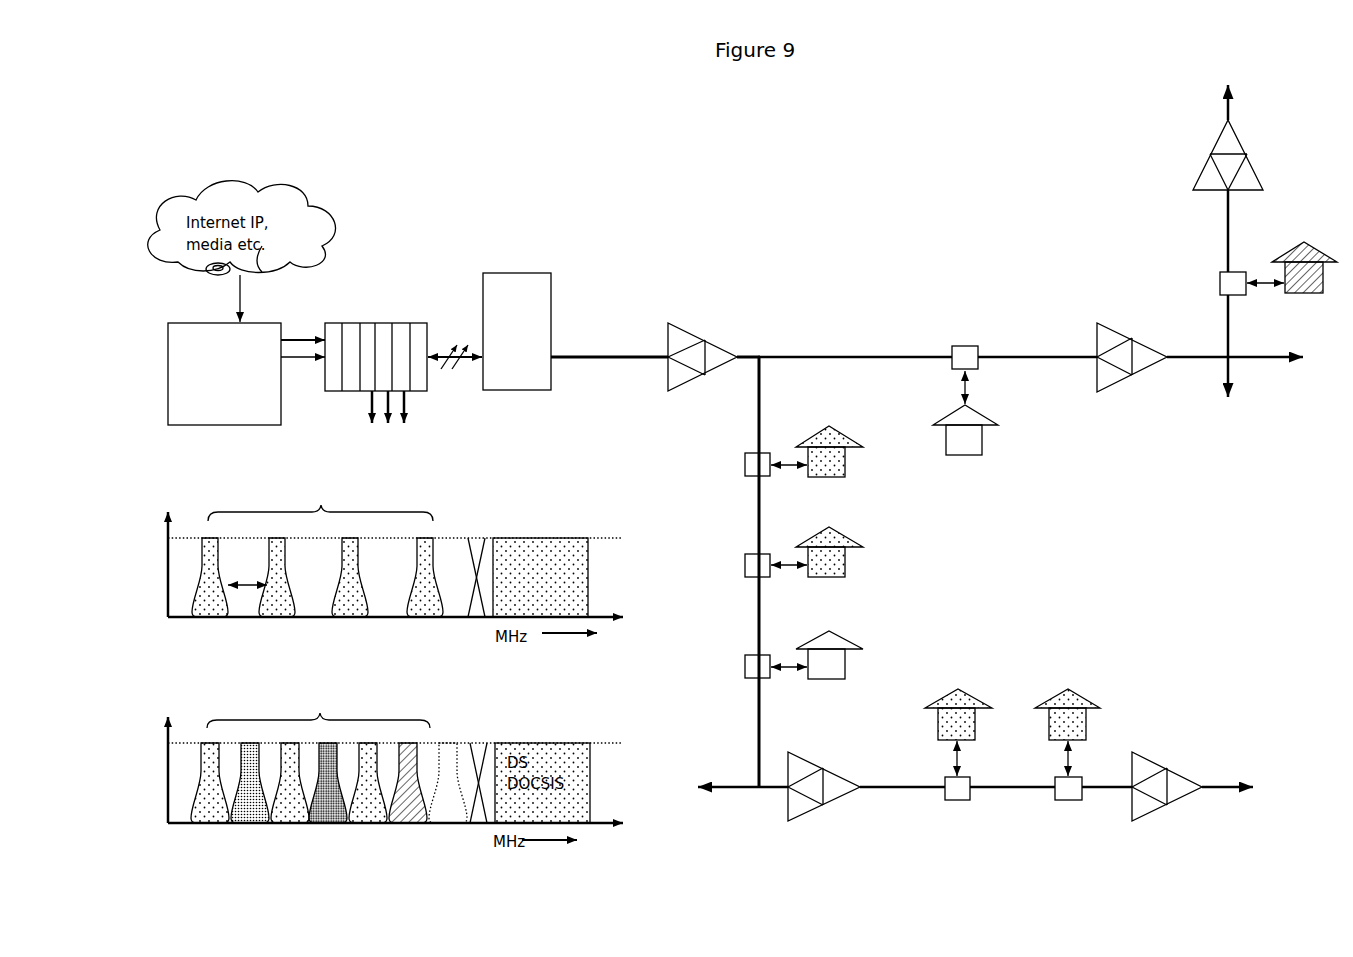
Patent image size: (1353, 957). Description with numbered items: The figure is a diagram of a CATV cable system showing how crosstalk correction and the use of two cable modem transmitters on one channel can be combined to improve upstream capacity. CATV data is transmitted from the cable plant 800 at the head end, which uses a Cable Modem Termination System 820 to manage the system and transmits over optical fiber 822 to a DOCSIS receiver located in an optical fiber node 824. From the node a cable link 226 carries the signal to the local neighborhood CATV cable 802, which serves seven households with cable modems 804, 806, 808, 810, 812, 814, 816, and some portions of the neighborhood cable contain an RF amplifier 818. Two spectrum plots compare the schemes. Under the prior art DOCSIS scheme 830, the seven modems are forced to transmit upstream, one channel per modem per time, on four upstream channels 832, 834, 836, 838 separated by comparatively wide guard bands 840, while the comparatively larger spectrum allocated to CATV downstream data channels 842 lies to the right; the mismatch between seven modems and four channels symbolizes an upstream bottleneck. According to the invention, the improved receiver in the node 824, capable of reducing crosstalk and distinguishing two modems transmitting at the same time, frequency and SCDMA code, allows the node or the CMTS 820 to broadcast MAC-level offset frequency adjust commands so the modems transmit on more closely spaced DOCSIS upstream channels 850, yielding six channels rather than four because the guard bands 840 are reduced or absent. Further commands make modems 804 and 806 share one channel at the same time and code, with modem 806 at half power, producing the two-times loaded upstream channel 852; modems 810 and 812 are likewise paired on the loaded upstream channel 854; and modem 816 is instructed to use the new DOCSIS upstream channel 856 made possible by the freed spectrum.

The cable plant 800 is at (224, 374).
The Cable Modem Termination System 820 is at (400, 286).
The optical fiber 822 is at (456, 382).
The optical fiber node 824 is at (517, 331).
The trunk link from DR 226 is at (626, 346).
The local neighborhood CATV cable 802 is at (745, 517).
The household with cable modem 804 is at (852, 437).
The household with cable modem 806 is at (855, 540).
The household with cable modem 808 is at (851, 640).
The household with cable modem 810 is at (972, 693).
The household with cable modem 812 is at (1087, 693).
The household with cable modem 814 is at (966, 462).
The household with cable modem 816 is at (1311, 246).
The RF amplifier 818 is at (1121, 320).
The prior art DOCSIS scheme 830 is at (312, 498).
The upstream channel 832 is at (210, 577).
The upstream channel 834 is at (277, 577).
The upstream channel 836 is at (350, 577).
The upstream channel 838 is at (425, 577).
The guard band 840 is at (247, 580).
The CATV downstream data channels 842 is at (542, 527).
The closely spaced DOCSIS upstream channels 850 is at (318, 711).
The two-times loaded DOCSIS upstream channel 852 is at (243, 834).
The two transmitters per channel loaded DOCSIS upstream channel 854 is at (323, 833).
The new DOCSIS upstream channel 856 is at (420, 837).